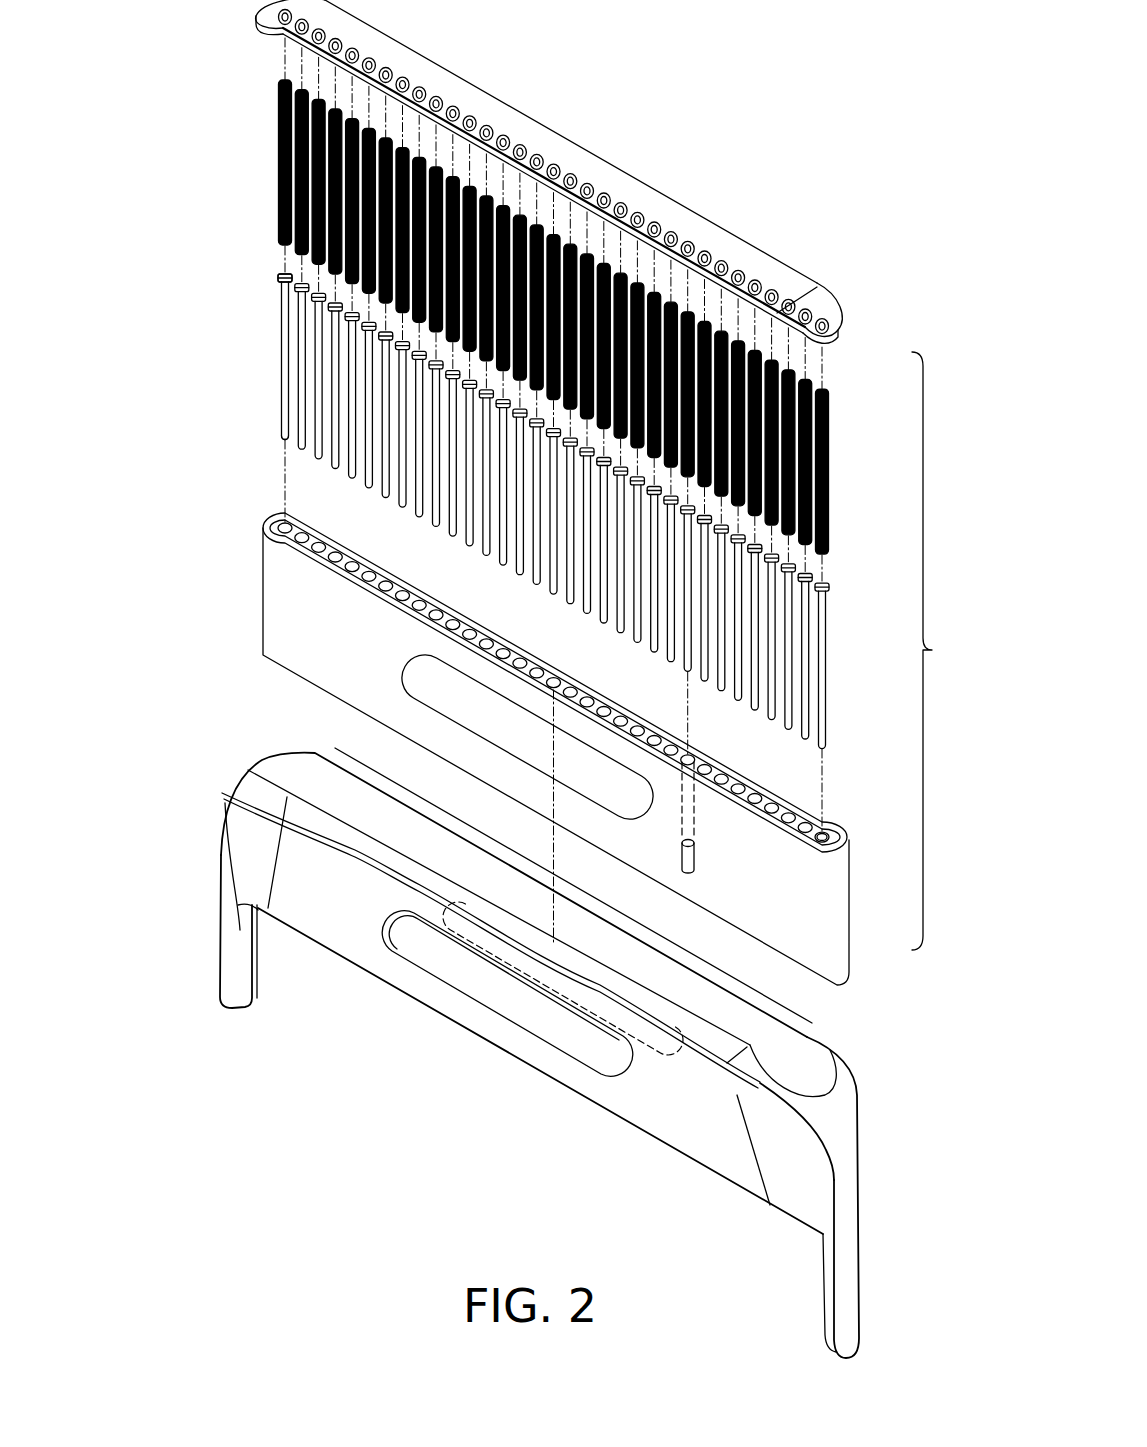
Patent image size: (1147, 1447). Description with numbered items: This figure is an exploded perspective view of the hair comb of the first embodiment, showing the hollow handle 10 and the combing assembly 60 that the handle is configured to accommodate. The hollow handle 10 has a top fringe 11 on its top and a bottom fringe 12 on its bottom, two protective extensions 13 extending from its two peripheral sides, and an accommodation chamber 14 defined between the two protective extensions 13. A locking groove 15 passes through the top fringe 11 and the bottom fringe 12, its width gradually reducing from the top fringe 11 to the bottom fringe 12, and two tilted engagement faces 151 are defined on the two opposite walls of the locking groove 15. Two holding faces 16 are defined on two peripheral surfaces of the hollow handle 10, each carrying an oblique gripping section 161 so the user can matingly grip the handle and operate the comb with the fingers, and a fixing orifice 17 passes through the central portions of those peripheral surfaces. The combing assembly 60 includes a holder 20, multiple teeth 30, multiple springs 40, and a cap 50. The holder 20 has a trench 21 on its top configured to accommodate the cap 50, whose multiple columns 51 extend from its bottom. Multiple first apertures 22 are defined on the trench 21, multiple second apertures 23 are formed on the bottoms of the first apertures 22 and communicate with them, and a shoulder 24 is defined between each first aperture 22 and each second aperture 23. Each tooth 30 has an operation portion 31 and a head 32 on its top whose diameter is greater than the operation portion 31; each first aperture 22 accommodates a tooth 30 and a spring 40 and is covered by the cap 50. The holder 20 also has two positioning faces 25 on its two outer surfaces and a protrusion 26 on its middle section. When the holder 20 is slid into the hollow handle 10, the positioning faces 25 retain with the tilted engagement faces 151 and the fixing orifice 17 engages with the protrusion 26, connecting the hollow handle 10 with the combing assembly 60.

The hollow handle 10 is at (515, 1021).
The top fringe 11 is at (347, 767).
The bottom fringe 12 is at (313, 944).
The protective extensions 13 is at (228, 952).
The accommodation chamber 14 is at (480, 1088).
The locking groove 15 is at (444, 860).
The tilted engagement faces 151 is at (733, 1027).
The holding faces 16 is at (660, 1102).
The oblique gripping sections 161 is at (790, 1137).
The fixing orifice 17 is at (553, 1040).
The holder 20 is at (490, 730).
The trench 21 is at (787, 800).
The first apertures 22 is at (357, 552).
The second apertures 23 is at (683, 862).
The shoulder 24 is at (697, 848).
The positioning faces 25 is at (303, 600).
The protrusion 26 is at (510, 735).
The teeth 30 is at (481, 577).
The operation portion 31 is at (284, 300).
The head 32 is at (284, 272).
The springs 40 is at (284, 137).
The cap 50 is at (549, 171).
The columns 51 is at (650, 207).
The combing assembly 60 is at (943, 651).